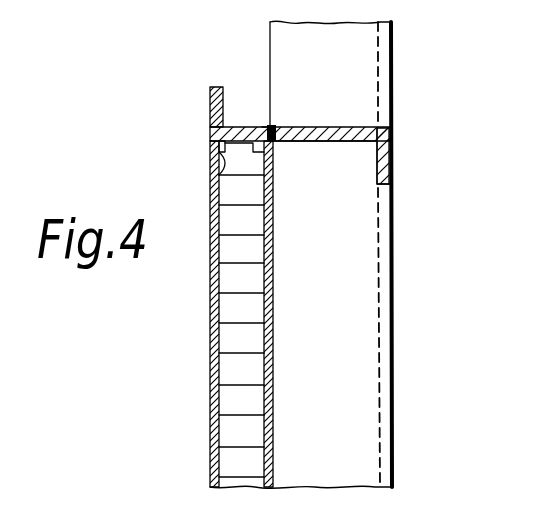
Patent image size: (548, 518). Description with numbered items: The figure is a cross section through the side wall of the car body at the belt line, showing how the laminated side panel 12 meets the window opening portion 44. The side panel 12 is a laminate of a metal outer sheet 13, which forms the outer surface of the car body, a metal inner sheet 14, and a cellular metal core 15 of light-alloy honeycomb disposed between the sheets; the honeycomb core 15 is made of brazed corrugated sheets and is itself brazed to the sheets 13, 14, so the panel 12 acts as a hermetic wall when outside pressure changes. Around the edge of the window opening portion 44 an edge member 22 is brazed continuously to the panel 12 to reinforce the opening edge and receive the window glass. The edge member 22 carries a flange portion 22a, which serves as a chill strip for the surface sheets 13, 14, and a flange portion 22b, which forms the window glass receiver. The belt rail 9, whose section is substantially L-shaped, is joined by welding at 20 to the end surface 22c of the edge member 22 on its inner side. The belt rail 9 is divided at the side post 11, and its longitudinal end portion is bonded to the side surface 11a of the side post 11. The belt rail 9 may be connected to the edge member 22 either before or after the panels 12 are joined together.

The belt rail 9 is at (347, 127).
The side post 11 is at (393, 285).
The side surface of the side post 11a is at (365, 98).
The side panel 12 is at (213, 270).
The outer sheet 13 is at (213, 335).
The inner sheet 14 is at (277, 368).
The cellular metal core 15 is at (232, 464).
The weld 20 is at (275, 128).
The edge member 22 is at (208, 115).
The flange portion 22a is at (215, 187).
The flange portion 22b is at (222, 88).
The end surface of the edge member 22c is at (270, 127).
The window opening portion 44 is at (360, 49).